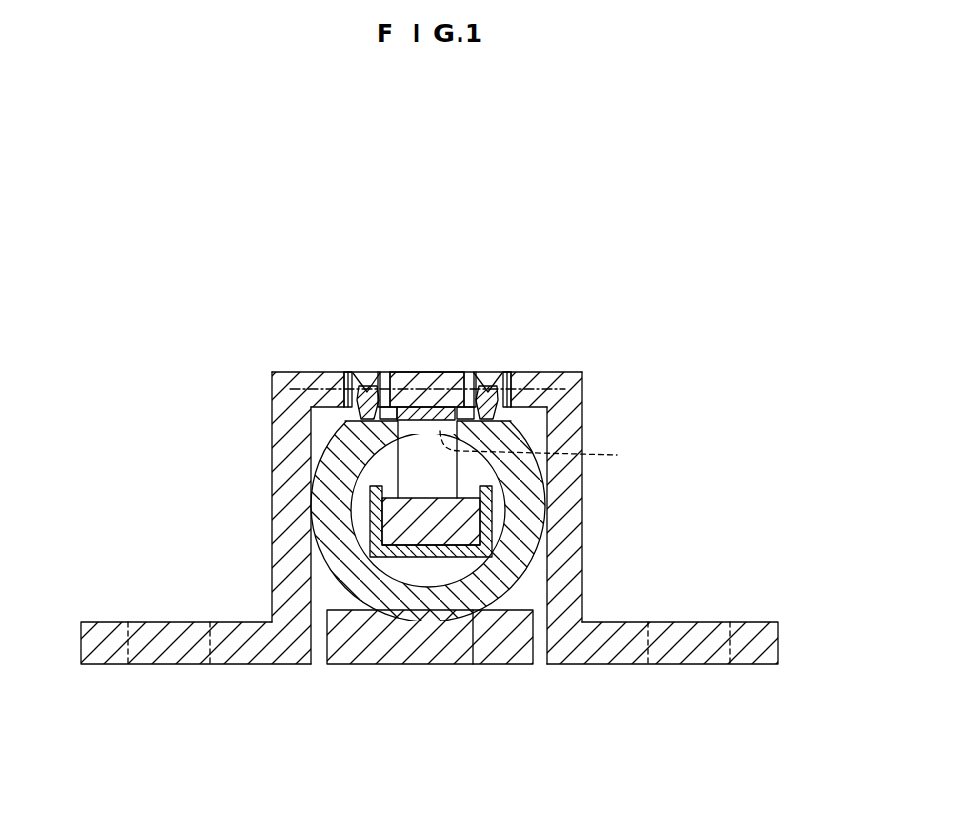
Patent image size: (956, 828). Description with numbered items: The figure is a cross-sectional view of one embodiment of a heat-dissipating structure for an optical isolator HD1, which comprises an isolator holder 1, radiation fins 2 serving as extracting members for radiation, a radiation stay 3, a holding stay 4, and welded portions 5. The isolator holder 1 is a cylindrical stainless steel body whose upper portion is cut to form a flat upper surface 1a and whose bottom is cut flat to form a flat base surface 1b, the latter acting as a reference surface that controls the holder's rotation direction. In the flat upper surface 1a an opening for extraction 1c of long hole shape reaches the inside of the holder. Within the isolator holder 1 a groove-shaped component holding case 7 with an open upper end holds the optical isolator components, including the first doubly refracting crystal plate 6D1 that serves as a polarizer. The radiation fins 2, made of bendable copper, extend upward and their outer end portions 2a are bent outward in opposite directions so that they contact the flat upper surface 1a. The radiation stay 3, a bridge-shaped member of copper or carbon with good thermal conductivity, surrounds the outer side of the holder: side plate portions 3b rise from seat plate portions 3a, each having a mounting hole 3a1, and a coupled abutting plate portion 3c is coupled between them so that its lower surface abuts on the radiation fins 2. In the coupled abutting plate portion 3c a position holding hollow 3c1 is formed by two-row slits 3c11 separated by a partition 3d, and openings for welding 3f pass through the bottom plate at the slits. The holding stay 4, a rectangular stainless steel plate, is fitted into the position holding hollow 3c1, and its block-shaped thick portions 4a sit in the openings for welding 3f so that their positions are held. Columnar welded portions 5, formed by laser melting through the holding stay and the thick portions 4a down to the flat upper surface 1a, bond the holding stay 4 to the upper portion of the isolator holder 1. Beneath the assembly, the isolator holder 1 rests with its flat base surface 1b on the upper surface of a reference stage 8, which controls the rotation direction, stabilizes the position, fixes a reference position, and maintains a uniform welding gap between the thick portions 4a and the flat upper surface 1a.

The heat-dissipating structure for an optical isolator HD1 is at (443, 184).
The isolator holder 1 is at (557, 516).
The flat upper surface 1a is at (452, 371).
The flat base surface 1b is at (474, 664).
The opening for extraction 1c is at (541, 452).
The radiation fins 2 is at (362, 505).
The outer end portions 2a is at (380, 430).
The radiation stay 3 is at (441, 508).
The seat plate portions 3a is at (108, 662).
The mounting hole 3a1 is at (196, 664).
The side plate portions 3b is at (297, 535).
The coupled abutting plate portion 3c is at (305, 371).
The position holding hollow 3c1 is at (472, 371).
The two-row slits 3c11 is at (381, 371).
The partition 3d is at (428, 371).
The openings for welding 3f is at (352, 414).
The holding stay 4 is at (428, 344).
The thick portions for welding 4a is at (340, 402).
The welded portions 5 is at (370, 385).
The first doubly refracting crystal plate 6D1 is at (549, 542).
The component holding case 7 is at (480, 550).
The reference stage 8 is at (375, 658).